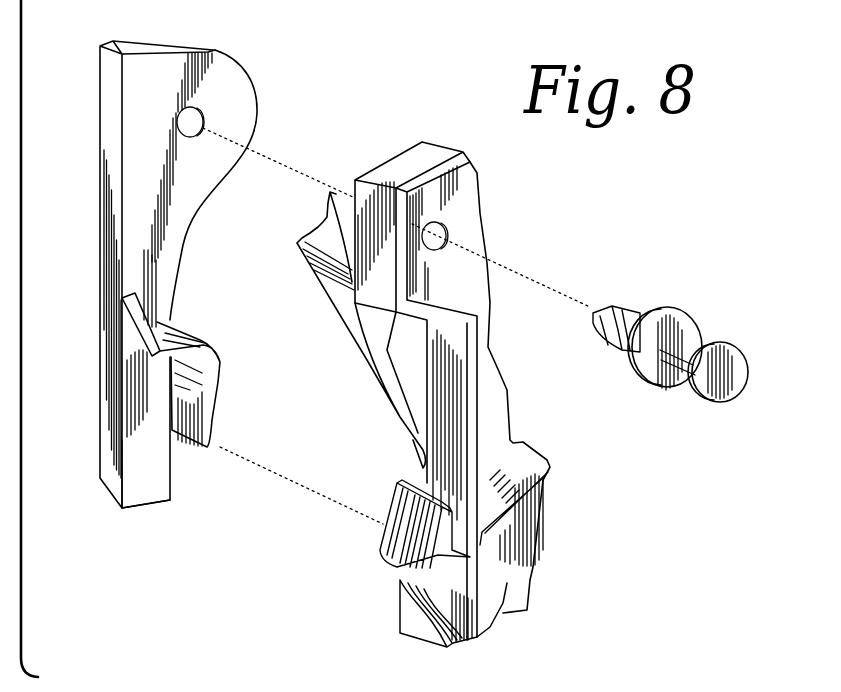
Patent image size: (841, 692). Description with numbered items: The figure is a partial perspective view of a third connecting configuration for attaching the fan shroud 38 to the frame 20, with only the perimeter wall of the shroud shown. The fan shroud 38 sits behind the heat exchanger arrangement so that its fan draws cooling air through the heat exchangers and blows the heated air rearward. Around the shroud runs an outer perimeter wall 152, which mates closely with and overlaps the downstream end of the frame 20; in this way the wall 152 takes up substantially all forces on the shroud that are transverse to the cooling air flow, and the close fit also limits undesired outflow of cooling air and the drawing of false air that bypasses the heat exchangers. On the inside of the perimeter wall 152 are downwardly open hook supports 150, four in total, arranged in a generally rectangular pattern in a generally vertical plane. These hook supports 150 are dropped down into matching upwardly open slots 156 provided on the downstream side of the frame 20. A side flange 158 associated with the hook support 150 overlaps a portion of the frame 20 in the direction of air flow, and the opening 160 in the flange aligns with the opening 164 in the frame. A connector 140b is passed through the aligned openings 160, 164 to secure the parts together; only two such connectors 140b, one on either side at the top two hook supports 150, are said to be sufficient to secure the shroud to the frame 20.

The frame 20 is at (400, 613).
The fan shroud 38 is at (98, 480).
The connector 140b is at (663, 392).
The downwardly open hook support 150 is at (192, 447).
The outer perimeter wall 152 is at (140, 482).
The upwardly open slot 156 is at (462, 539).
The side flange 158 is at (243, 92).
The opening 160 is at (198, 138).
The opening 164 is at (446, 234).